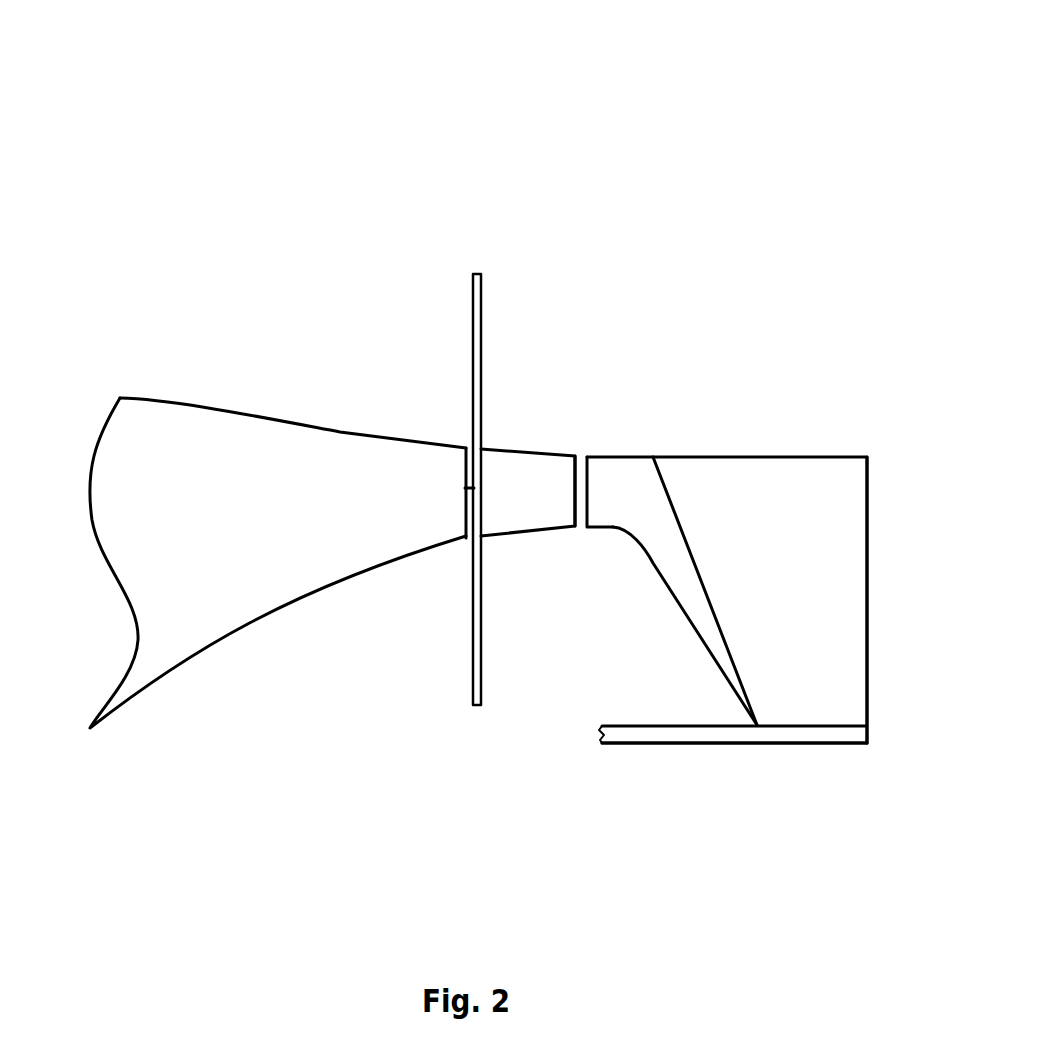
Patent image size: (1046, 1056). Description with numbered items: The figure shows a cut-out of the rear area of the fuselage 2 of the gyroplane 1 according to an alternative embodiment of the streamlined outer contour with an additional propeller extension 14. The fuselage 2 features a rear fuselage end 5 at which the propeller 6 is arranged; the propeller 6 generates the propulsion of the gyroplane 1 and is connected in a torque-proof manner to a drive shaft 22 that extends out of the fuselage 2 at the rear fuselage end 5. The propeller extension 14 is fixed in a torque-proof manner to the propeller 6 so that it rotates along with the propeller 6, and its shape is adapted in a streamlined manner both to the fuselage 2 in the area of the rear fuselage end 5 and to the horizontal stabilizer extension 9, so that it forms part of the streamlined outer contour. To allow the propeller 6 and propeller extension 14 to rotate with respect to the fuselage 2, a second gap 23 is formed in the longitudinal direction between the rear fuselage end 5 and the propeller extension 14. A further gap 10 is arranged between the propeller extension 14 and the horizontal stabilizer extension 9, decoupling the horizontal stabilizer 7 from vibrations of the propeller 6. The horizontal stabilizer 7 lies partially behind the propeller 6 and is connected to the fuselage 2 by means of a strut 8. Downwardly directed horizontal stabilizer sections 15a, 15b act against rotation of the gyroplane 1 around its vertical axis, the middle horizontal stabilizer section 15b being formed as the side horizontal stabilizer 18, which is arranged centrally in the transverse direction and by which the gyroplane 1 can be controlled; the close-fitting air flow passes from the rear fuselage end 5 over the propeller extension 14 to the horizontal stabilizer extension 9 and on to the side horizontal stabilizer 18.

The gyroplane 1 is at (286, 105).
The fuselage 2 is at (278, 637).
The rear fuselage end 5 is at (357, 370).
The propeller 6 is at (411, 428).
The horizontal stabilizer 7 is at (727, 502).
The strut 8 is at (739, 694).
The horizontal stabilizer extension 9 is at (637, 394).
The gap 10 is at (545, 668).
The propeller extension 14 is at (534, 384).
The horizontal stabilizer section 15a is at (859, 688).
The middle horizontal stabilizer section 15b is at (734, 792).
The side horizontal stabilizer 18 is at (685, 707).
The drive shaft 22 is at (472, 488).
The second gap 23 is at (410, 682).